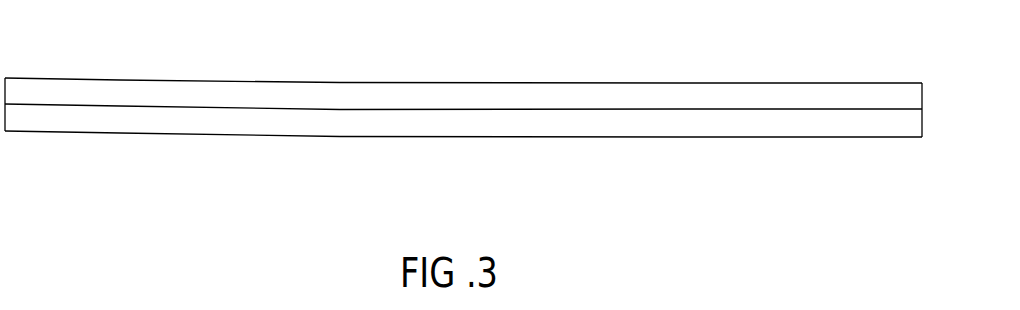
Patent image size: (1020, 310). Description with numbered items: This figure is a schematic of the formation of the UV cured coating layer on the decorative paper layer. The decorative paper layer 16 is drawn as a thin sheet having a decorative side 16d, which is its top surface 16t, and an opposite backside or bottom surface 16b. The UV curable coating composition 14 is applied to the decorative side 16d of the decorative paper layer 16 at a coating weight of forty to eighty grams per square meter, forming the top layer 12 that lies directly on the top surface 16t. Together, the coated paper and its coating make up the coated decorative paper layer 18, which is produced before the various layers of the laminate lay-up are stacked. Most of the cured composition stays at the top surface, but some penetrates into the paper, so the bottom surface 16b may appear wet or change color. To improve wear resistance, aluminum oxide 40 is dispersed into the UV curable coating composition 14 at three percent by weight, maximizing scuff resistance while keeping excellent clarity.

The top layer 12 is at (527, 83).
The UV curable coating composition 14 is at (463, 100).
The decorative paper layer 16 is at (463, 118).
The decorative side 16d is at (242, 107).
The top surface 16t is at (379, 110).
The bottom surface 16b is at (271, 134).
The coated decorative paper layer 18 is at (752, 163).
The aluminum oxide 40 is at (849, 93).